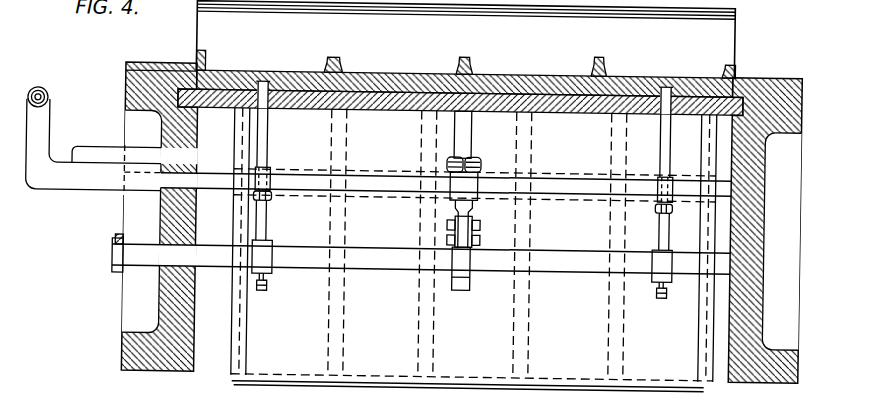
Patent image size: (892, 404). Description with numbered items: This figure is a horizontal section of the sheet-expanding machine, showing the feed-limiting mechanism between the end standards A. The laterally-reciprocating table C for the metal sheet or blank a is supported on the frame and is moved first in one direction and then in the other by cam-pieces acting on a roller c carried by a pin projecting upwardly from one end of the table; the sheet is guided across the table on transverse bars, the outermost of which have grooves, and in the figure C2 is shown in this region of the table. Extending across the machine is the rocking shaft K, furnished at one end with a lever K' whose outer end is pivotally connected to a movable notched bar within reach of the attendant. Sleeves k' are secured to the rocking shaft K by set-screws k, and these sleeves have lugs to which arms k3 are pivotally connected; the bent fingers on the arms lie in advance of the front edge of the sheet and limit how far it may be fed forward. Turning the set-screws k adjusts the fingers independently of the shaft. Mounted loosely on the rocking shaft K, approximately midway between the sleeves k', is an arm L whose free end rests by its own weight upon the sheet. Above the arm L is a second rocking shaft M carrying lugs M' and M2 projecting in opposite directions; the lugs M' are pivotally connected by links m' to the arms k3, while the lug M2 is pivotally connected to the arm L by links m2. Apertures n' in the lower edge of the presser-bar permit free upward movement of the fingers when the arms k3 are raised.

The end standards A is at (160, 297).
The laterally-reciprocating table C is at (234, 143).
The partitions C2 is at (341, 239).
The metal sheet a is at (472, 234).
The roller c is at (94, 130).
The rocking shaft M is at (427, 186).
The rocking shaft K is at (421, 261).
The lever K' is at (96, 253).
The arms k3 is at (267, 144).
The apertures n' is at (464, 110).
The lugs M' is at (464, 193).
The links m' is at (463, 215).
The sleeves k' is at (462, 261).
The set-screws k is at (461, 297).
The lug M2 is at (463, 157).
The links m2 is at (480, 160).
The arm L is at (468, 217).